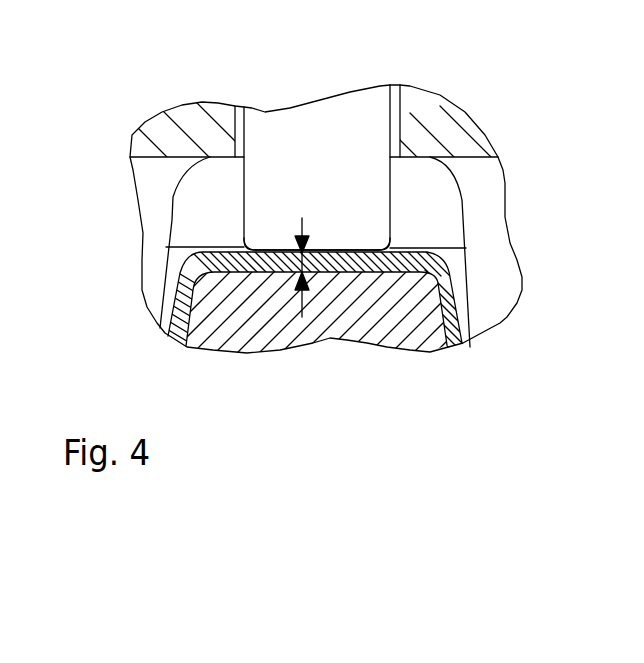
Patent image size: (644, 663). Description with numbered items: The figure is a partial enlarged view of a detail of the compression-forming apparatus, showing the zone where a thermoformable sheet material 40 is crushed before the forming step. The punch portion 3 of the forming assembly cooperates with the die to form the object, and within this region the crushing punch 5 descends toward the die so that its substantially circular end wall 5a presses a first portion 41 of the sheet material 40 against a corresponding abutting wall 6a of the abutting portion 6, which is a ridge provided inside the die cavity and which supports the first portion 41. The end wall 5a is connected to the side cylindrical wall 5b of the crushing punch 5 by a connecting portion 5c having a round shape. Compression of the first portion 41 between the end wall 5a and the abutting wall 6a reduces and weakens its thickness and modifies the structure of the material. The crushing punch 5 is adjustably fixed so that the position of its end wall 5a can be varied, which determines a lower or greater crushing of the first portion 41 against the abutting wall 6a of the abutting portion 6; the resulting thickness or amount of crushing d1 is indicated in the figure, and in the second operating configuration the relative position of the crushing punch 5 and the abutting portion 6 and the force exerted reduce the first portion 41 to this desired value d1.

The punch portion 3 is at (158, 228).
The crushing punch portion 5 is at (365, 178).
The end wall 5a is at (330, 255).
The side cylindrical wall 5b is at (244, 180).
The connecting portion 5c is at (250, 249).
The abutting portion 6 is at (420, 317).
The abutting wall 6a is at (390, 248).
The thermoformable sheet material 40 is at (458, 300).
The first portion 41 is at (288, 262).
The thickness or amount of crushing d1 is at (302, 317).